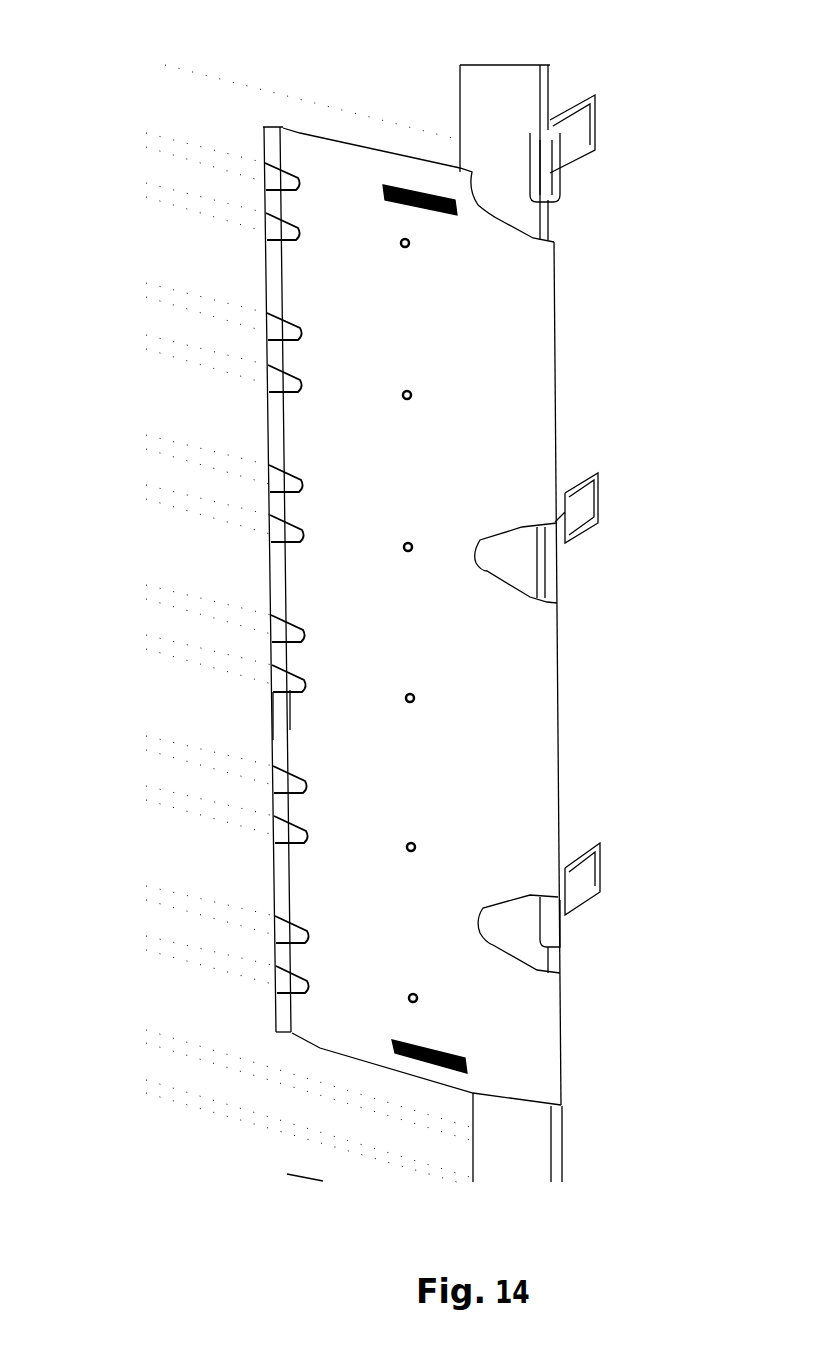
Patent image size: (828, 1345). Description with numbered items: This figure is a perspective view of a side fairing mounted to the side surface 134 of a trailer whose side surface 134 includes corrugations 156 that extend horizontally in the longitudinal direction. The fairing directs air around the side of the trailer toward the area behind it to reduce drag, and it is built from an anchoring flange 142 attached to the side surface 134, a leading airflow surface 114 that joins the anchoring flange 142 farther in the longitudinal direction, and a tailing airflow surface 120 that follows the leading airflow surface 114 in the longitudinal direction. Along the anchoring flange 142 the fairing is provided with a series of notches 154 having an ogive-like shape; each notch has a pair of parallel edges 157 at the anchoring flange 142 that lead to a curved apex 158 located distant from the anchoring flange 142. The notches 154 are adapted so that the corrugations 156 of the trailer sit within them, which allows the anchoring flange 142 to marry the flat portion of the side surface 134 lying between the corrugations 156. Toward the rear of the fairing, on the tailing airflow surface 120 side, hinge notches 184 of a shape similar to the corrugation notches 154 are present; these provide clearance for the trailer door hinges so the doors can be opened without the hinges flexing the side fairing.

The leading airflow surface 114 is at (345, 454).
The tailing airflow surface 120 is at (511, 460).
The side surface 134 is at (185, 410).
The anchoring flange 142 is at (268, 127).
The notches 154 is at (262, 675).
The corrugations 156 is at (161, 648).
The parallel edges 157 is at (281, 693).
The curved apex 158 is at (283, 692).
The hinge notches 184 is at (517, 567).